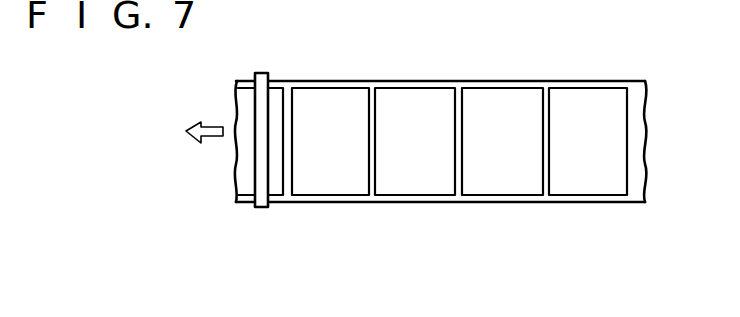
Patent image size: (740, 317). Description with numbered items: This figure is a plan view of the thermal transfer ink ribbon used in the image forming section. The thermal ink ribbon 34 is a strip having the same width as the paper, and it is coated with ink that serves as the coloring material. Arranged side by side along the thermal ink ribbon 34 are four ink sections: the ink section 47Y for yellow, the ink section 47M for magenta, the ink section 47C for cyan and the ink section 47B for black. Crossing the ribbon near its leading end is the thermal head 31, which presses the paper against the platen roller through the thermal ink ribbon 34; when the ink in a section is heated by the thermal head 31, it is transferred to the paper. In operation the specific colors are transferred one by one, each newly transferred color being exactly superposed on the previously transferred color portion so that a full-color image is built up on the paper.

The thermal head 31 is at (259, 74).
The thermal ink ribbon 34 is at (449, 82).
The ink section for yellow 47Y is at (327, 187).
The ink section for magenta 47M is at (414, 187).
The ink section for cyan 47C is at (497, 187).
The ink section for black 47B is at (594, 190).